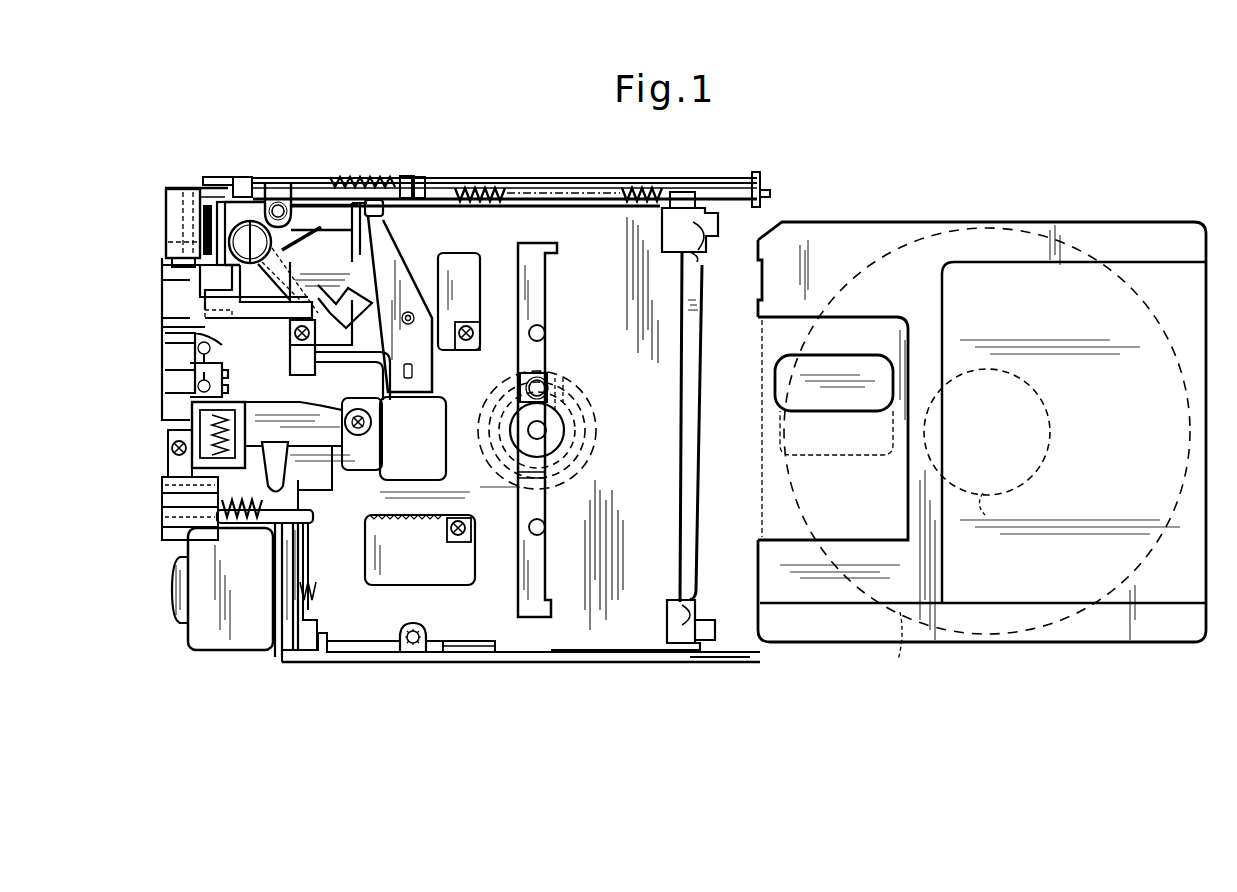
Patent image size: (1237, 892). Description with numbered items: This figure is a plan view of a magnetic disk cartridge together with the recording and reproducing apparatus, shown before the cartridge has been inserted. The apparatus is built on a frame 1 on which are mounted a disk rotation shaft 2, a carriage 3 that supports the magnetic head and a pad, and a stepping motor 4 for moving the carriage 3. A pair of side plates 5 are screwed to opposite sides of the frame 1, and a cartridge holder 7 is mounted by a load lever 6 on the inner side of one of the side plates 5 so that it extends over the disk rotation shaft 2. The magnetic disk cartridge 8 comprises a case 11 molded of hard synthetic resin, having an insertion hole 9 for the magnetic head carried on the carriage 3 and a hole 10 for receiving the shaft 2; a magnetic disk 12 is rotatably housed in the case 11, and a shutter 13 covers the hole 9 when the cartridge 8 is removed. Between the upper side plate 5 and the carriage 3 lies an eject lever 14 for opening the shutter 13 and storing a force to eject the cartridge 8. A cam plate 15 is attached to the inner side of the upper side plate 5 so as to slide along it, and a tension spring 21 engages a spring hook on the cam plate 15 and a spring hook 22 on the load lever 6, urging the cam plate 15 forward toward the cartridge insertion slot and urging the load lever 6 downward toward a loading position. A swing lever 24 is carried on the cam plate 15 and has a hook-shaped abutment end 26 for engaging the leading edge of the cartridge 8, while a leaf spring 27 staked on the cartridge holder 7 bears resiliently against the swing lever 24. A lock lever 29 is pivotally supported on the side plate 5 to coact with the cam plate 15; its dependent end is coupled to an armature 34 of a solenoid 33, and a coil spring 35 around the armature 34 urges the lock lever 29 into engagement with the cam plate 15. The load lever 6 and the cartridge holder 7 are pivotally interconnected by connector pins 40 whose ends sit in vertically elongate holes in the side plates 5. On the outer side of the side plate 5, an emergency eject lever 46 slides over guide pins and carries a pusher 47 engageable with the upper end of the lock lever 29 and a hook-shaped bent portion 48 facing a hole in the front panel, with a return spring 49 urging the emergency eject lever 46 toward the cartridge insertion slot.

The frame 1 is at (198, 352).
The disk rotation shaft 2 is at (545, 408).
The carriage 3 is at (225, 485).
The stepping motor 4 is at (240, 642).
The side plates 5 is at (200, 185).
The load lever 6 is at (515, 210).
The cartridge holder 7 is at (370, 628).
The magnetic disk cartridge 8 is at (1008, 221).
The insertion hole 9 is at (776, 446).
The hole 10 is at (987, 454).
The case 11 is at (1020, 615).
The magnetic disk 12 is at (885, 645).
The shutter 13 is at (757, 487).
The eject lever 14 is at (277, 268).
The cam plate 15 is at (427, 196).
The tension spring 21 is at (487, 190).
The spring hook 22 is at (676, 192).
The swing lever 24 is at (405, 196).
The hook-shaped abutment end 26 is at (352, 236).
The leaf spring 27 is at (402, 272).
The lock lever 29 is at (205, 202).
The solenoid 33 is at (262, 207).
The armature 34 is at (205, 243).
The coil spring 35 is at (205, 245).
The connector pins 40 is at (485, 655).
The emergency eject lever 46 is at (290, 178).
The pusher 47 is at (240, 188).
The hook-shaped bent portion 48 is at (762, 180).
The return spring 49 is at (358, 178).